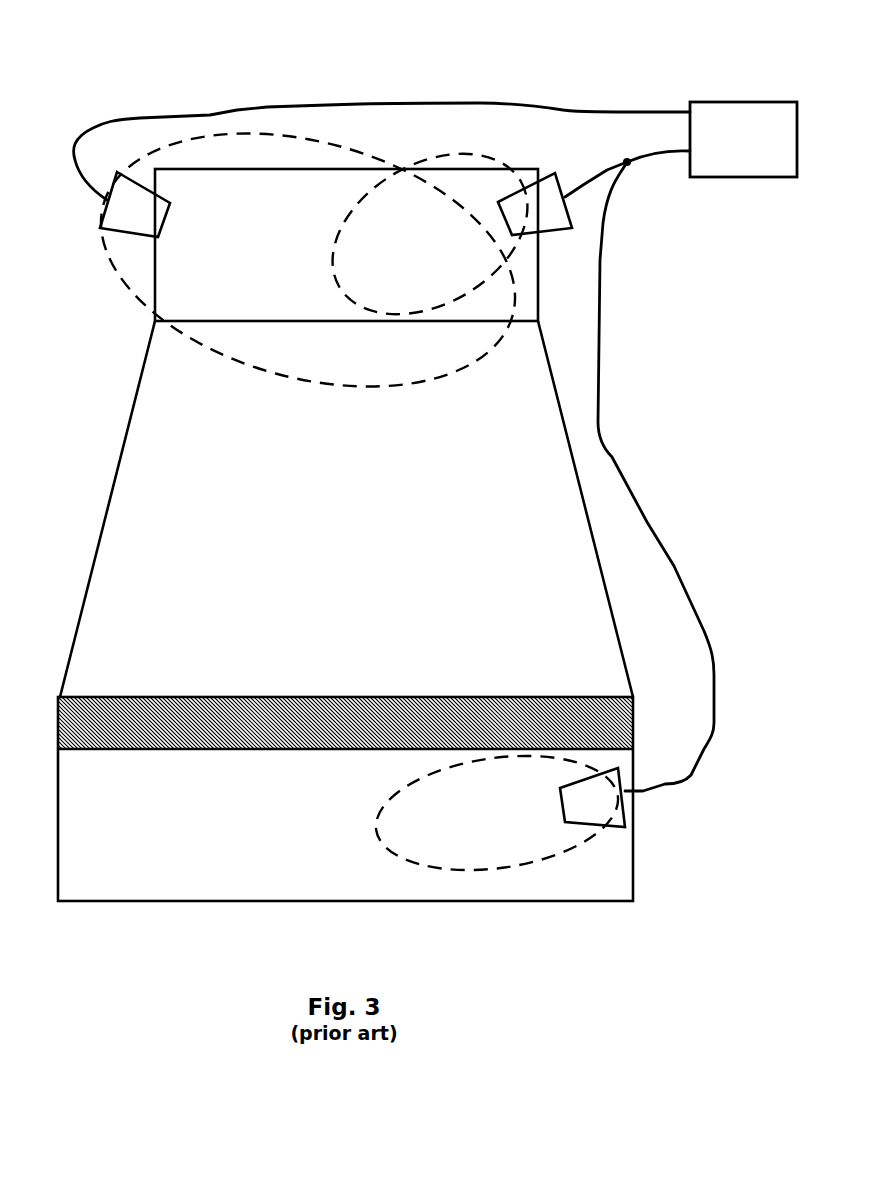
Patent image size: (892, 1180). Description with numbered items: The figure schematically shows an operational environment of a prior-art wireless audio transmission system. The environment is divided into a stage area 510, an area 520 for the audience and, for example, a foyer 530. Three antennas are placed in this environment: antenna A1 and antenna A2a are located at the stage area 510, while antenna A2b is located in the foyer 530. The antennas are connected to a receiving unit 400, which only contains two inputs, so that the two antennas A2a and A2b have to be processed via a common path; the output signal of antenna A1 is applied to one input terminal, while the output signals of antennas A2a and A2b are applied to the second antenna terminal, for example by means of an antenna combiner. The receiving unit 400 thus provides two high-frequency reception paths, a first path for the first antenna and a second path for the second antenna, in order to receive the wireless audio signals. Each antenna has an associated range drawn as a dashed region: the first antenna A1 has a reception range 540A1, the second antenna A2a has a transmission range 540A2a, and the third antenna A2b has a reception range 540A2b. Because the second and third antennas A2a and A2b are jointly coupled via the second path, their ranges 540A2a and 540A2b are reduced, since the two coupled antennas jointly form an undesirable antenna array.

The receiving unit 400 is at (743, 139).
The stage area 510 is at (346, 245).
The area for the audience 520 is at (346, 509).
The foyer 530 is at (345, 799).
The reception range 540A1 is at (260, 132).
The transmission range 540A2a is at (447, 157).
The reception range 540A2b is at (472, 758).
The antenna A1 is at (135, 204).
The antenna A2a is at (535, 204).
The antenna A2b is at (592, 797).